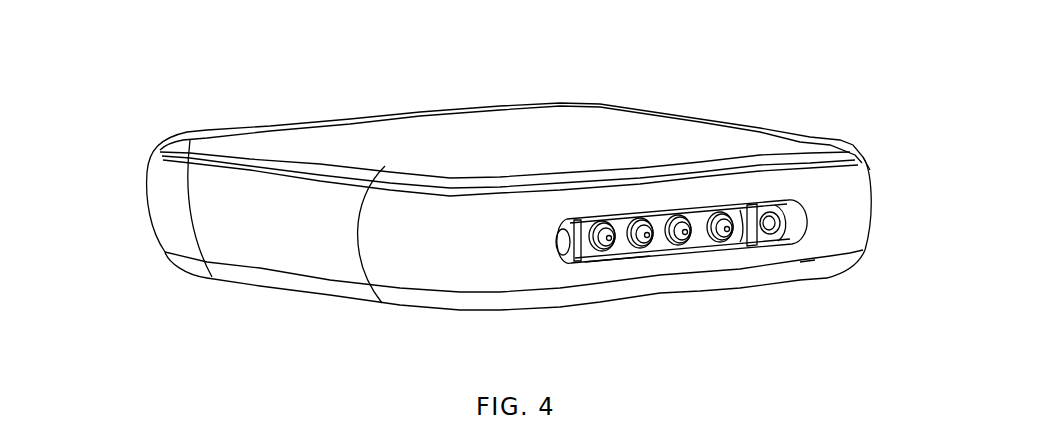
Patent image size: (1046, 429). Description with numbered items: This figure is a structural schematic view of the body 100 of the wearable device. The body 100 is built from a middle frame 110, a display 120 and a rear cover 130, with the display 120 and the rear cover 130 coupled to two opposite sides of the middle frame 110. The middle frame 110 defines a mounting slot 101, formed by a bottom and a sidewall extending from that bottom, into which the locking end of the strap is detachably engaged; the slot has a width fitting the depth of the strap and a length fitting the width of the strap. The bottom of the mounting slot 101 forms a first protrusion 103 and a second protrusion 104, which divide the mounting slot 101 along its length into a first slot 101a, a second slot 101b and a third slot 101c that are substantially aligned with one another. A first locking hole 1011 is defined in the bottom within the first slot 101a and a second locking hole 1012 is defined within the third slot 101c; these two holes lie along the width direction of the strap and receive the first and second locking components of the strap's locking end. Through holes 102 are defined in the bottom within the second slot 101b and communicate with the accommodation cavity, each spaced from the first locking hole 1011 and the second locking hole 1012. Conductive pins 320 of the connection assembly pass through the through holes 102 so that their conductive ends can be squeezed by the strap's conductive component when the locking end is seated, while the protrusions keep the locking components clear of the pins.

The body 100 is at (435, 135).
The middle frame 110 is at (267, 240).
The display 120 is at (337, 148).
The rear cover 130 is at (420, 297).
The mounting slot 101 is at (667, 262).
The first locking hole 1011 is at (567, 260).
The second locking hole 1012 is at (810, 263).
The first slot 101a is at (570, 213).
The second slot 101b is at (704, 212).
The third slot 101c is at (778, 203).
The through holes 102 is at (667, 215).
The first protrusion 103 is at (603, 266).
The second protrusion 104 is at (747, 250).
The conductive pins 320 is at (605, 215).